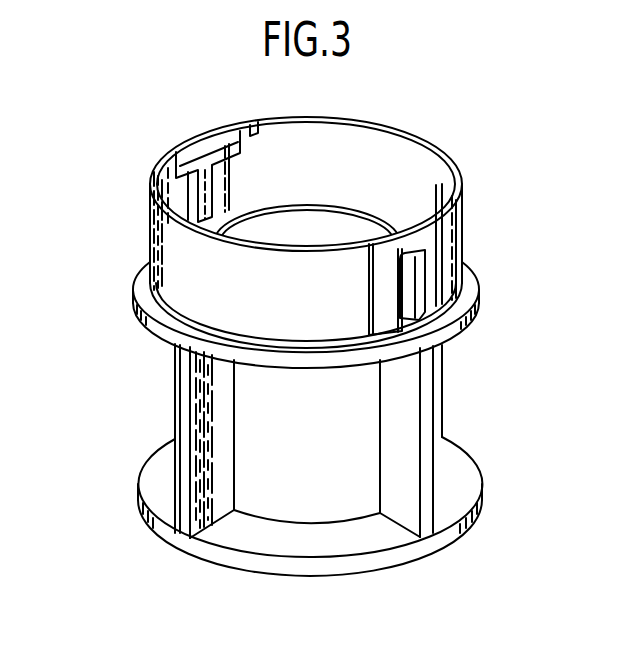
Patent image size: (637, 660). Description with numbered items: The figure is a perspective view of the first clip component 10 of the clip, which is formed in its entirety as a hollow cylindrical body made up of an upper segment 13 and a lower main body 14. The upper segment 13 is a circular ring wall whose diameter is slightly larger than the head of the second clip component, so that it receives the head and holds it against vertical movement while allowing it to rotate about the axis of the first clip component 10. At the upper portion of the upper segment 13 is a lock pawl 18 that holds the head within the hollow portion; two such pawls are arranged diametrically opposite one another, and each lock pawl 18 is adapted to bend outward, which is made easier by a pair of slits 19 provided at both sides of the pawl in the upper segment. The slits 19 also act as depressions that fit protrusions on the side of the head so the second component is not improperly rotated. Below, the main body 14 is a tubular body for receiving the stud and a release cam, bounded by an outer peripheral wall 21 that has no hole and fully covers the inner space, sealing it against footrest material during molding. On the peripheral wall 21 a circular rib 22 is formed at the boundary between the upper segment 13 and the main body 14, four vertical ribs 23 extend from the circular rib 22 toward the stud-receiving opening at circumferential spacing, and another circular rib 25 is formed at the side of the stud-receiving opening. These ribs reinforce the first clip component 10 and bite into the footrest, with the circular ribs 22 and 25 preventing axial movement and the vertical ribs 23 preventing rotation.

The first clip component 10 is at (452, 148).
The upper segment 13 is at (146, 238).
The main body 14 is at (159, 401).
The lock pawl 18 is at (196, 142).
The slits 19 is at (372, 287).
The outer peripheral wall 21 is at (307, 496).
The circular rib 22 is at (478, 306).
The vertical ribs 23 is at (430, 378).
The circular rib 25 is at (480, 523).